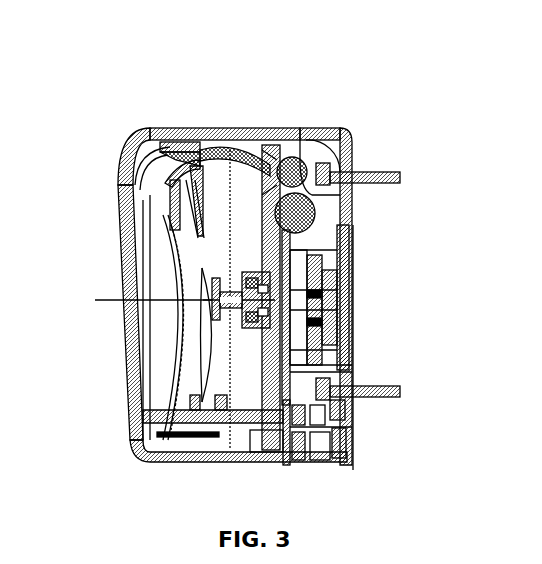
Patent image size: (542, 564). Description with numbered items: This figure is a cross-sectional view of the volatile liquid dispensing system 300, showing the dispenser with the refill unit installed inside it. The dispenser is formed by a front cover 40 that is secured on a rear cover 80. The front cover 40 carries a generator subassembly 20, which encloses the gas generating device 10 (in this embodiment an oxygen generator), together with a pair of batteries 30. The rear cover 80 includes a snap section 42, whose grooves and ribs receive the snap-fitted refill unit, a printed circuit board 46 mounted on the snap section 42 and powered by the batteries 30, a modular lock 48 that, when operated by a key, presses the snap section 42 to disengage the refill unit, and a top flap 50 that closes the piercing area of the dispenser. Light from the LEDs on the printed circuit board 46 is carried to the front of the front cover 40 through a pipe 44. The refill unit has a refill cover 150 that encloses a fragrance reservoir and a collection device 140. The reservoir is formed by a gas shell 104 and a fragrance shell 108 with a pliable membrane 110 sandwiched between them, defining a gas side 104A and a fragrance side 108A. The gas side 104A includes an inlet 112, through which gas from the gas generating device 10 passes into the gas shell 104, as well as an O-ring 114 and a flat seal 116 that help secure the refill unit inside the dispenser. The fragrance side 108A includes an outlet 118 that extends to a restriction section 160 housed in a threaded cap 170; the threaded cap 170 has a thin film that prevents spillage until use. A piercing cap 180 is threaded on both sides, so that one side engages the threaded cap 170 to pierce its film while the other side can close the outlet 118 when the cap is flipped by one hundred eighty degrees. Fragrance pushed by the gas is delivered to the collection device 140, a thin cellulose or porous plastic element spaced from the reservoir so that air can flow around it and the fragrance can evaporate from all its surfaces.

The volatile liquid dispensing system 300 is at (377, 55).
The piercing cap 180 is at (128, 128).
The restriction section 160 is at (128, 162).
The threaded cap 170 is at (122, 192).
The outlet 118 is at (122, 204).
The fragrance shell 108 is at (163, 270).
The refill cover 150 is at (125, 287).
The inlet 112 is at (212, 300).
The fragrance side 108A is at (167, 317).
The pliable membrane 110 is at (200, 343).
The collection device 140 is at (150, 376).
The pipe 44 is at (153, 460).
The front cover 40 is at (262, 463).
The modular lock 48 is at (337, 463).
The printed circuit board 46 is at (325, 366).
The generator subassembly 20 is at (320, 330).
The O-ring 114 is at (320, 318).
The gas generating device 10 is at (300, 301).
The snap section 42 is at (323, 283).
The flat seal 116 is at (318, 270).
The gas side 104A is at (288, 245).
The gas shell 104 is at (200, 238).
The top flap 50 is at (250, 127).
The rear cover 80 is at (332, 128).
The pair of batteries 30 is at (352, 177).